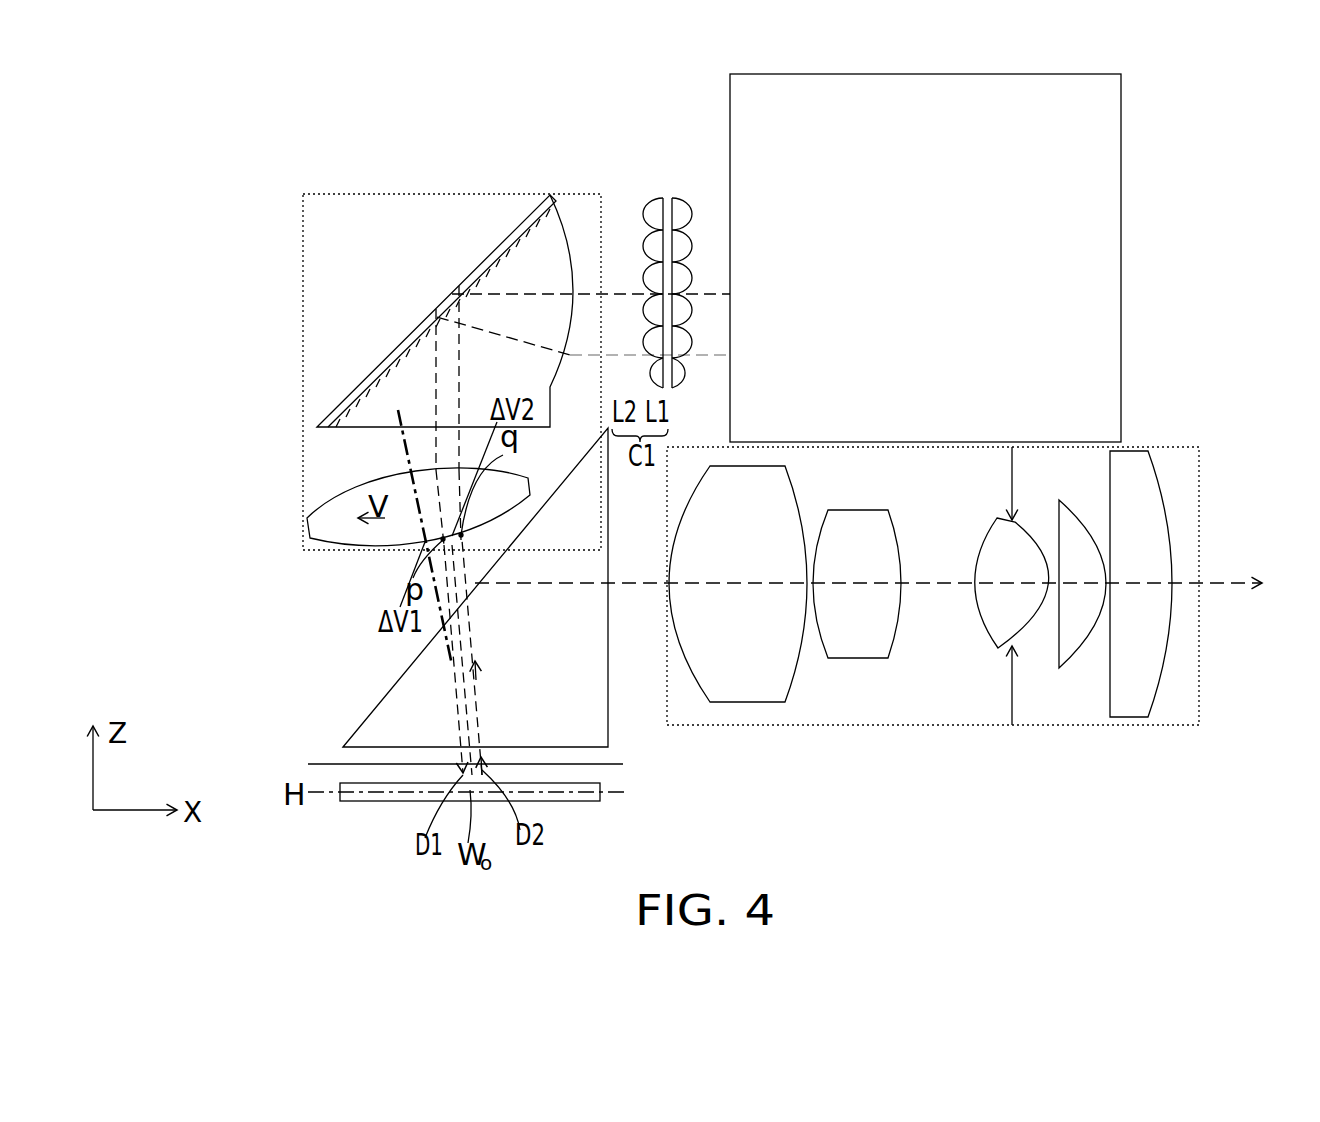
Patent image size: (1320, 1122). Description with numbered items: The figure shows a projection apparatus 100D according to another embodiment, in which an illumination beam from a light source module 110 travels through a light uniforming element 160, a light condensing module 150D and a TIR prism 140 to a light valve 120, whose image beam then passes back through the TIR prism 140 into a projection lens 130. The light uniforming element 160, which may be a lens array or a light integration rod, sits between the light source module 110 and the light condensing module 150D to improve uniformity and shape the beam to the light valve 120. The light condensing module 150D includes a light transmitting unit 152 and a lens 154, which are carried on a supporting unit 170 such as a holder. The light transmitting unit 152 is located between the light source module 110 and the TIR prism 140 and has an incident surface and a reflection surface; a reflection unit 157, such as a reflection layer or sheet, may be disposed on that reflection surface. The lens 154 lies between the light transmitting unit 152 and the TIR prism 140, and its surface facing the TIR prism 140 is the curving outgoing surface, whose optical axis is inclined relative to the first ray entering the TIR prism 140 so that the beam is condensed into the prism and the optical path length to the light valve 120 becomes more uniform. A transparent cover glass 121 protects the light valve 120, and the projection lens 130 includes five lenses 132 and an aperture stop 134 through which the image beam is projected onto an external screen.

The projection apparatus 100D is at (1319, 878).
The light source module 110 is at (1121, 272).
The light valve 120 is at (600, 797).
The cover glass 121 is at (618, 763).
The projection lens 130 is at (1112, 727).
The lenses 132 is at (765, 683).
The aperture stop 134 is at (1012, 712).
The TIR prism 140 is at (340, 764).
The light condensing module 150D is at (334, 166).
The light transmitting unit 152 is at (486, 278).
The lens 154 is at (372, 545).
The reflection unit 157 is at (333, 406).
The light uniforming element 160 is at (672, 188).
The supporting unit 170 is at (303, 222).